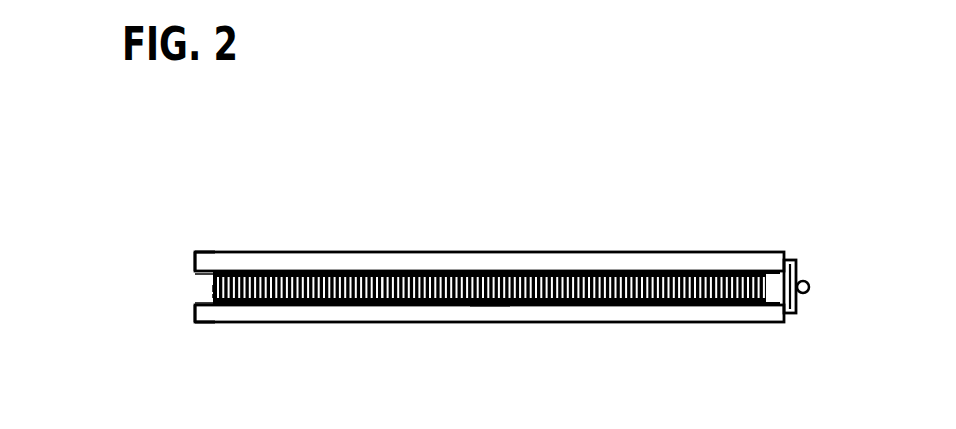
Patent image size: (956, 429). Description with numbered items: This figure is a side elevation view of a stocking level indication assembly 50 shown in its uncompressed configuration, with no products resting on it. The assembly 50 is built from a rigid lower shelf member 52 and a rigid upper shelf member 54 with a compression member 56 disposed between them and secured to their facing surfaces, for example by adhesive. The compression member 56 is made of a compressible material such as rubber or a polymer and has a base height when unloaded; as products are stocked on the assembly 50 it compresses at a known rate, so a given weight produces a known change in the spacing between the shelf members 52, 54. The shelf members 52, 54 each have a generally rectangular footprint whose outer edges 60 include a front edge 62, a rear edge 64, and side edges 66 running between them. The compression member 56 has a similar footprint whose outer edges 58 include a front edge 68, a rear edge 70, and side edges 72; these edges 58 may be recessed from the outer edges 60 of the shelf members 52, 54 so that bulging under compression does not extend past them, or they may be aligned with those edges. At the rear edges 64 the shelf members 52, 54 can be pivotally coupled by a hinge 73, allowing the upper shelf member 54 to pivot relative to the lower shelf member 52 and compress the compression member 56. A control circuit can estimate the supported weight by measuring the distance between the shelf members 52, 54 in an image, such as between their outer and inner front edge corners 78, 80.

The stocking level indication assembly 50 is at (692, 106).
The lower shelf member 52 is at (667, 313).
The upper shelf member 54 is at (480, 263).
The compression member 56 is at (570, 305).
The outer edges of the compression member 58 is at (213, 285).
The outer edges of the shelf members 60 is at (195, 313).
The front edge 62 is at (193, 262).
The rear edge 64 is at (788, 259).
The side edges 66 is at (487, 307).
The front edge of the compression member 68 is at (213, 296).
The rear edge of the compression member 70 is at (779, 293).
The side edges of the compression member 72 is at (386, 305).
The hinge 73 is at (810, 286).
The outer front edge corners 78 is at (195, 252).
The inner front edge corners 80 is at (195, 276).